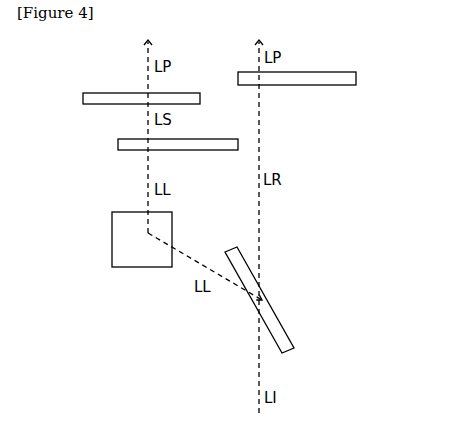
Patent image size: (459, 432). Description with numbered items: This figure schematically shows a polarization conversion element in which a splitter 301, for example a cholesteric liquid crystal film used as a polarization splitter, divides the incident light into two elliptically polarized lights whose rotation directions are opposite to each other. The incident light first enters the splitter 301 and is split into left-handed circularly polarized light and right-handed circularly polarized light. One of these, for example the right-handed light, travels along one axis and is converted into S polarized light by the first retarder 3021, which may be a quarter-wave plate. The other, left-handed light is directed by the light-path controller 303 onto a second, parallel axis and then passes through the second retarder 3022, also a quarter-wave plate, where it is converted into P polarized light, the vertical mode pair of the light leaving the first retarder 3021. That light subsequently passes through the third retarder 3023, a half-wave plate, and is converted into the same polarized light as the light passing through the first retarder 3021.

The third retarder 3023 is at (83, 97).
The second retarder 3022 is at (118, 143).
The first retarder 3021 is at (356, 79).
The light-path controller 303 is at (112, 240).
The splitter 301 is at (295, 343).